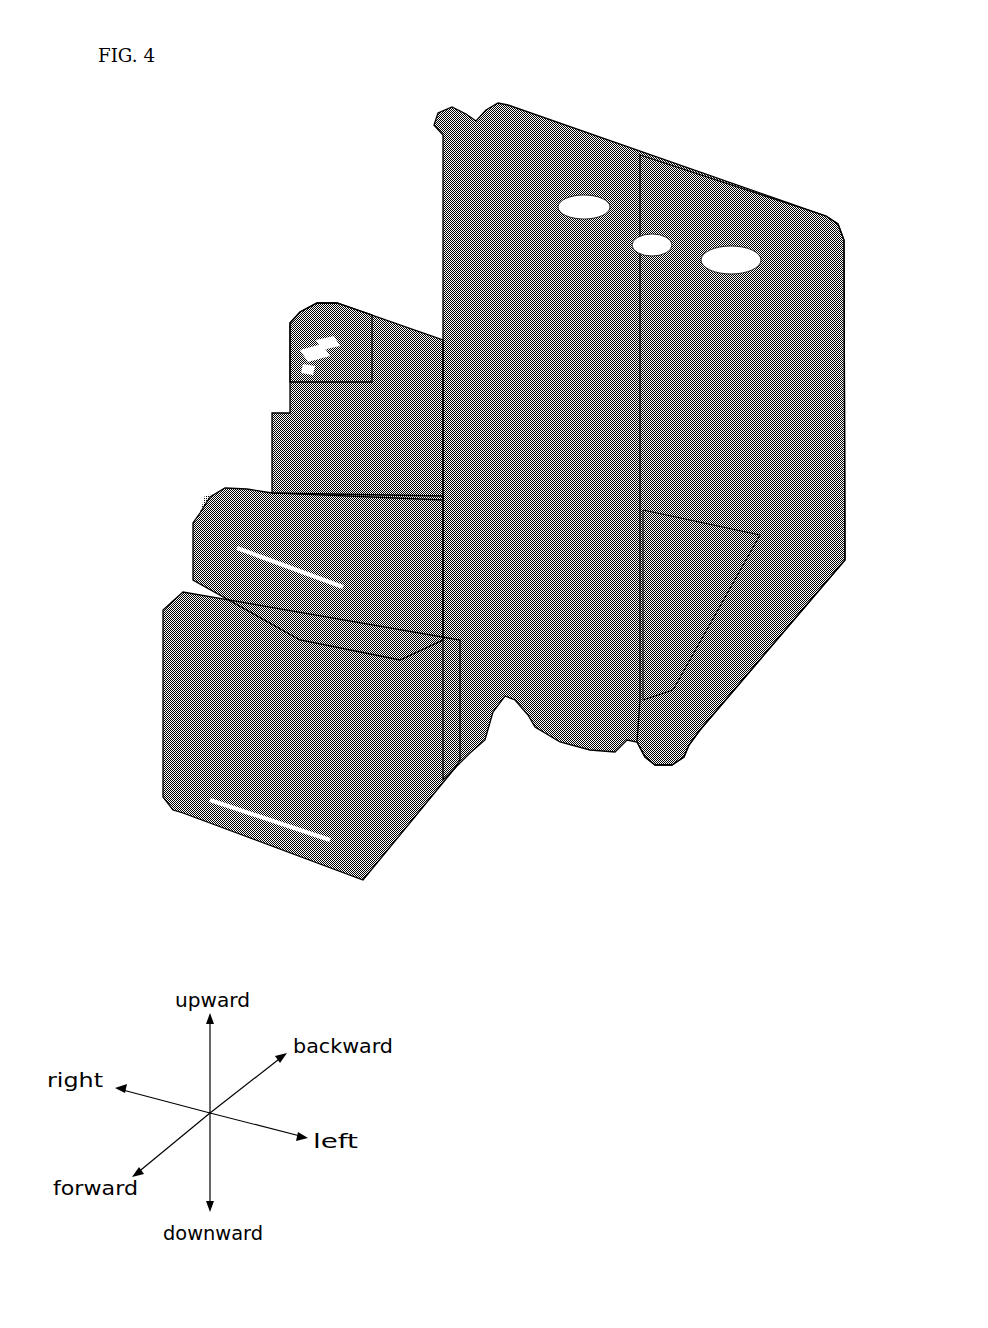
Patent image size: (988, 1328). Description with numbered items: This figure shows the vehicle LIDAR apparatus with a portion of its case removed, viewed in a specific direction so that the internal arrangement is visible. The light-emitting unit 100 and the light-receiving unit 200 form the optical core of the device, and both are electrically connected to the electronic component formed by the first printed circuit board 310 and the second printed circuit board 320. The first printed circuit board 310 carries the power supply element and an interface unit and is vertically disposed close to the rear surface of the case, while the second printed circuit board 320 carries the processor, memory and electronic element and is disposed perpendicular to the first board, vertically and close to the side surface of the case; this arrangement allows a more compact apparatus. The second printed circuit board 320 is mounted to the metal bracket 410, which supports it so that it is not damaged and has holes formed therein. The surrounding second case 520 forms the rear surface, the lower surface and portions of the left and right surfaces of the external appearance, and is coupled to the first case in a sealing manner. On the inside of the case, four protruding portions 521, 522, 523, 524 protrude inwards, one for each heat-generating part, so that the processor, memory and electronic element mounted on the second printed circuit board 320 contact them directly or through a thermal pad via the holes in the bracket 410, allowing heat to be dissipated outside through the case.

The light-emitting unit 100 is at (469, 444).
The light-receiving unit 200 is at (123, 643).
The first printed circuit board 310 is at (175, 595).
The second printed circuit board 320 is at (293, 347).
The bracket 410 is at (378, 318).
The second case 520 is at (528, 143).
The protruding portion 521 is at (580, 203).
The protruding portion 522 is at (652, 233).
The protruding portion 523 is at (733, 247).
The protruding portion 524 is at (843, 367).